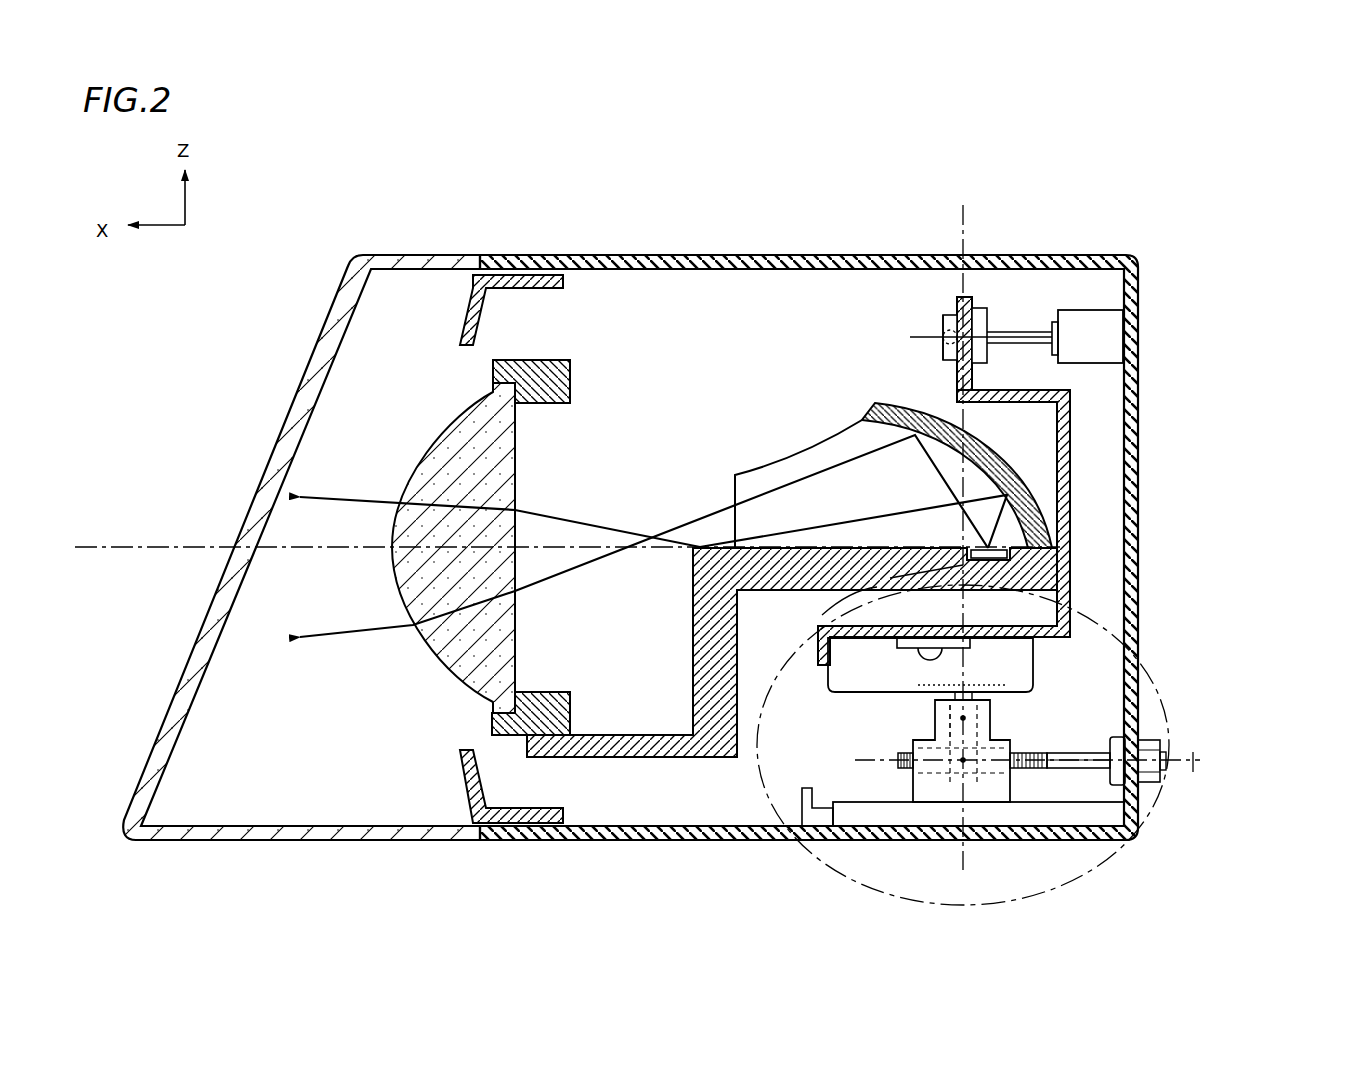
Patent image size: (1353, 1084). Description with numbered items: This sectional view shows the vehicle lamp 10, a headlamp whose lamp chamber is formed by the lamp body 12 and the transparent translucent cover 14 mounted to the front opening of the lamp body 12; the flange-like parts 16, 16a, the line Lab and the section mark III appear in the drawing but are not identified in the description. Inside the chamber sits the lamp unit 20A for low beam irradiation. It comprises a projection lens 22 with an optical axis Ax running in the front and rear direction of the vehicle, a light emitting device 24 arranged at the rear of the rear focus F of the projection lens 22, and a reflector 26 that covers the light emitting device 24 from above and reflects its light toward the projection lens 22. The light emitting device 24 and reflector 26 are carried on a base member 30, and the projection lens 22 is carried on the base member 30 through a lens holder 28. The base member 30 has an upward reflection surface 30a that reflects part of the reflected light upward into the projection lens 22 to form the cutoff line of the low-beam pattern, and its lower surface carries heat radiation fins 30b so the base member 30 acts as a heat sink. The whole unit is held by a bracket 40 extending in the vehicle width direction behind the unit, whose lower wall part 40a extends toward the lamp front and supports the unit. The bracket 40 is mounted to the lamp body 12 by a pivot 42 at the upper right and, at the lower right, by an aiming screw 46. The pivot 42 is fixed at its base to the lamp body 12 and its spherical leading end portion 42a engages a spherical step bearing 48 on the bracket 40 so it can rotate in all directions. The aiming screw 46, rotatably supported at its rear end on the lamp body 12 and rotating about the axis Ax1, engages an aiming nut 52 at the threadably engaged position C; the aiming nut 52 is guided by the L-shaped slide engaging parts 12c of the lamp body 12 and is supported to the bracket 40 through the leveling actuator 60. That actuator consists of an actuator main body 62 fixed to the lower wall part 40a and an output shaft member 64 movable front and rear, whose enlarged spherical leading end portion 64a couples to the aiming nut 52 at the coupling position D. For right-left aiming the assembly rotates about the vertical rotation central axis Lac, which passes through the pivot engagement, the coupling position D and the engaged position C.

The vehicle lamp 10 is at (457, 175).
The lamp body 12 is at (1148, 283).
The slide engaging part 12c is at (907, 807).
The translucent cover 14 is at (310, 347).
The flange 16 is at (458, 308).
The lower flange 16a is at (463, 750).
The lamp unit for low beam irradiation 20A is at (334, 548).
The projection lens 22 is at (393, 573).
The light emitting device 24 is at (967, 537).
The reflector 26 is at (1000, 443).
The lens holder 28 is at (573, 365).
The base member 30 is at (817, 617).
The upward reflection surface 30a is at (767, 547).
The heat radiation fins 30b is at (773, 613).
The bracket 40 is at (1026, 473).
The lower wall part 40a is at (883, 640).
The pivot 42 is at (980, 288).
The leading end portion 42a is at (943, 333).
The aiming screw 46 is at (1050, 763).
The spherical step bearing 48 is at (937, 313).
The aiming nut 52 is at (897, 735).
The leveling actuator 60 is at (1000, 768).
The actuator main body 62 is at (840, 685).
The output shaft member 64 is at (1000, 745).
The leading end portion 64a is at (980, 710).
The rear focus F is at (697, 545).
The coupling position D is at (950, 710).
The threadably engaged position C is at (950, 752).
The optical axis Ax is at (150, 547).
The axis Ax1 is at (1190, 755).
The rotation central axis Lac is at (963, 217).
The line Lab, point A Lab is at (937, 357).
The section III is at (1145, 635).